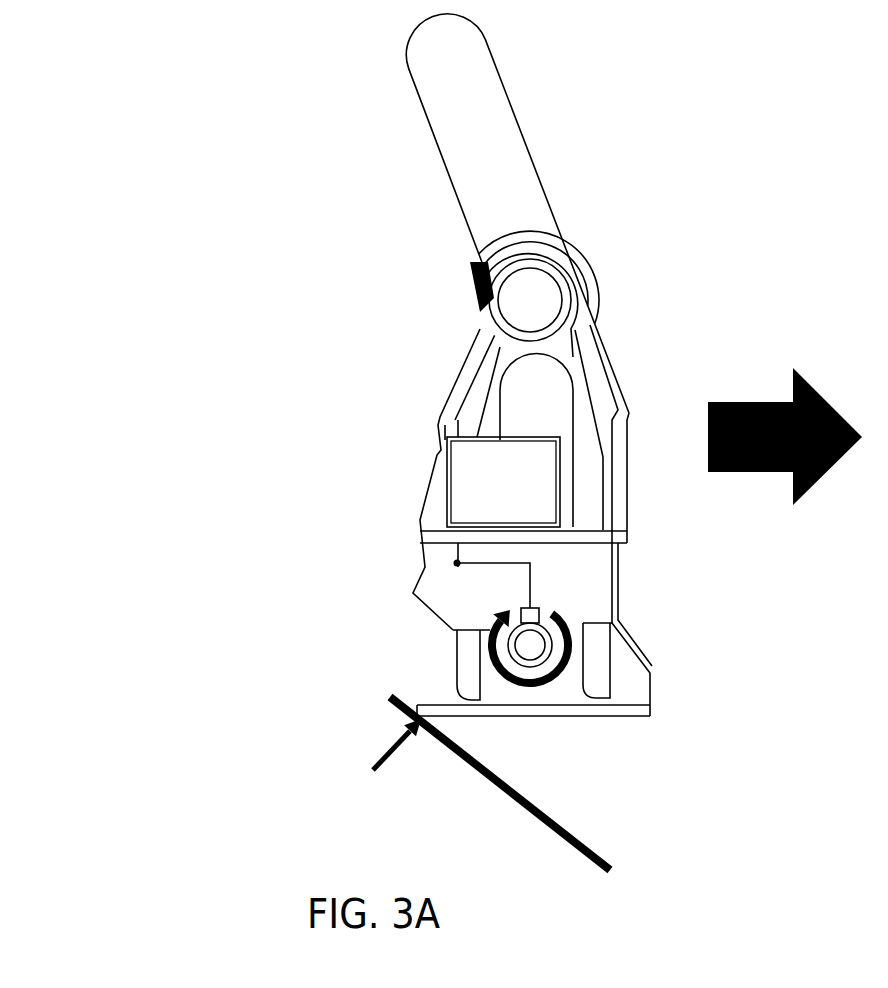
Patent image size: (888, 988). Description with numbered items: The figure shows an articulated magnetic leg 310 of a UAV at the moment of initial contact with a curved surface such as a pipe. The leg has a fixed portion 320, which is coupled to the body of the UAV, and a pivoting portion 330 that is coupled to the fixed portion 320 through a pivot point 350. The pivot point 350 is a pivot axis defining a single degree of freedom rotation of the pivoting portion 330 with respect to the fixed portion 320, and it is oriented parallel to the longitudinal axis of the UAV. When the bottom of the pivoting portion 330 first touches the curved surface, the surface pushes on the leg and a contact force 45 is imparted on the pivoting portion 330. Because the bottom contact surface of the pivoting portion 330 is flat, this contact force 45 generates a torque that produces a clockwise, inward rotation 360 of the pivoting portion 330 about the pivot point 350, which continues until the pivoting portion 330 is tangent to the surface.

The articulated magnetic leg 310 is at (515, 427).
The fixed portion 320 is at (381, 24).
The pivoting portion 330 is at (663, 717).
The pivot point 350 is at (455, 563).
The rotation direction 360 is at (533, 673).
The contact force 45 is at (261, 767).